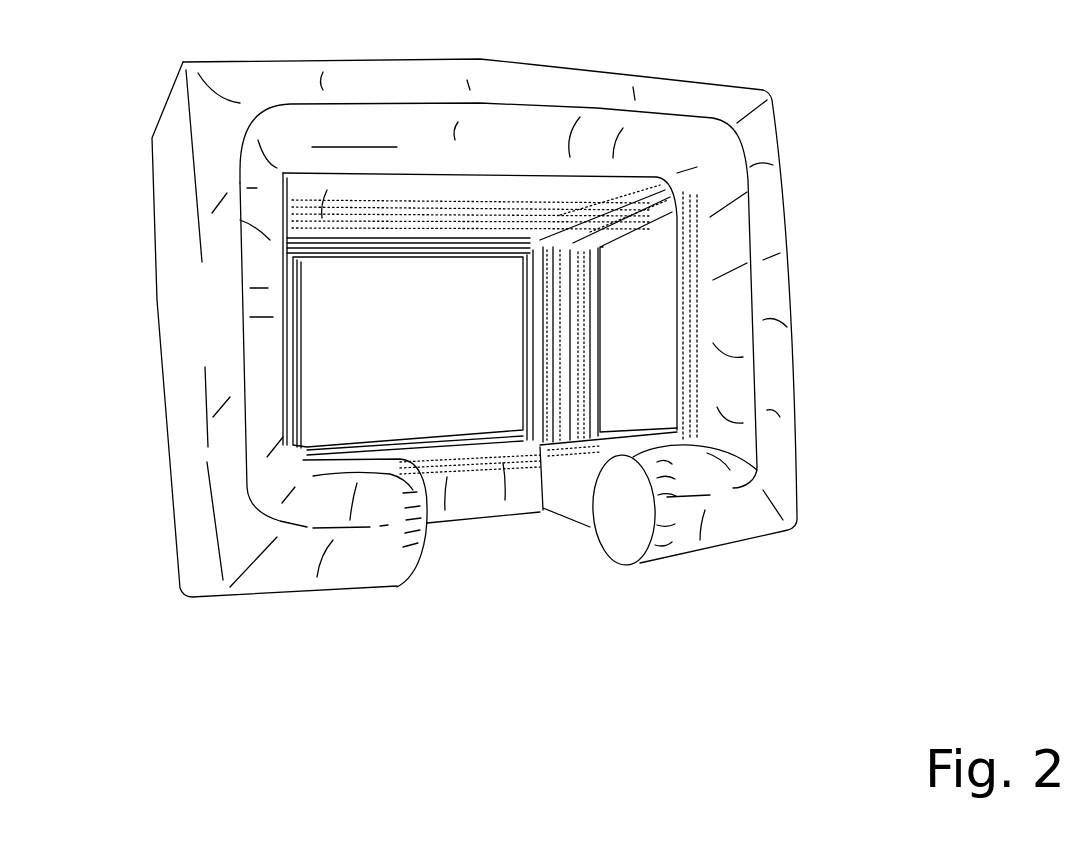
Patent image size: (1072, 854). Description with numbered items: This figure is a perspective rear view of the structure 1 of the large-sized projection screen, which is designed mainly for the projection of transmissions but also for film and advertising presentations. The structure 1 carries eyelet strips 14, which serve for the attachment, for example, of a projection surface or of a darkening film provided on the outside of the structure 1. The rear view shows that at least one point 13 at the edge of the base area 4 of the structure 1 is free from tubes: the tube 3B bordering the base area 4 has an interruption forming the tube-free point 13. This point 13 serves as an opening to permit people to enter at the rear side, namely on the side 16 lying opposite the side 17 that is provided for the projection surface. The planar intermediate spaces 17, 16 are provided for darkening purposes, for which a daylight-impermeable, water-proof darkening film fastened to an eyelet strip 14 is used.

The structure 1 is at (479, 336).
The tube 3B is at (380, 590).
The base area 4 is at (533, 546).
The tube-free point 13 is at (594, 545).
The eyelet strip 14 is at (443, 180).
The planar intermediate space 16 is at (666, 260).
The planar intermediate space 17 is at (428, 367).